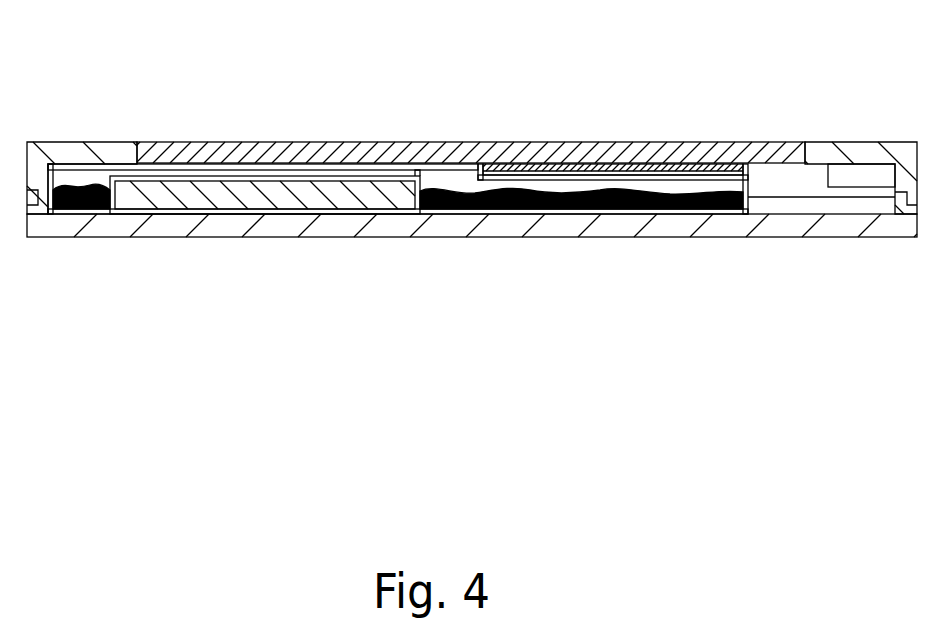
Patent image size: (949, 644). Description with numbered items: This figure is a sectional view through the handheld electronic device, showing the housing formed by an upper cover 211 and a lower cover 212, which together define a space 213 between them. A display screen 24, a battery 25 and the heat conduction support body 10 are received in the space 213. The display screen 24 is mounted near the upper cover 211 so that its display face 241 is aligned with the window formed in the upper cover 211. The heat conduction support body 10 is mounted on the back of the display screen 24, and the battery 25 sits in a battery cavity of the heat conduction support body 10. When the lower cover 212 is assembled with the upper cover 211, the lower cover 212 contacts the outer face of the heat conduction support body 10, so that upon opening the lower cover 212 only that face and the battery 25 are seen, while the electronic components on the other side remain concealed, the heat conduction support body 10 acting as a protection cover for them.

The upper cover 211 is at (73, 150).
The lower cover 212 is at (335, 227).
The space 213 is at (847, 185).
The display face 241 is at (316, 150).
The display screen 24 is at (557, 165).
The heat conduction support body 10 is at (673, 177).
The battery 25 is at (210, 193).